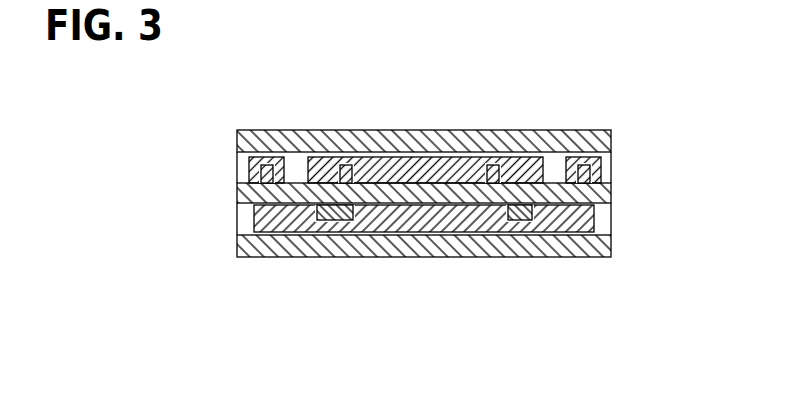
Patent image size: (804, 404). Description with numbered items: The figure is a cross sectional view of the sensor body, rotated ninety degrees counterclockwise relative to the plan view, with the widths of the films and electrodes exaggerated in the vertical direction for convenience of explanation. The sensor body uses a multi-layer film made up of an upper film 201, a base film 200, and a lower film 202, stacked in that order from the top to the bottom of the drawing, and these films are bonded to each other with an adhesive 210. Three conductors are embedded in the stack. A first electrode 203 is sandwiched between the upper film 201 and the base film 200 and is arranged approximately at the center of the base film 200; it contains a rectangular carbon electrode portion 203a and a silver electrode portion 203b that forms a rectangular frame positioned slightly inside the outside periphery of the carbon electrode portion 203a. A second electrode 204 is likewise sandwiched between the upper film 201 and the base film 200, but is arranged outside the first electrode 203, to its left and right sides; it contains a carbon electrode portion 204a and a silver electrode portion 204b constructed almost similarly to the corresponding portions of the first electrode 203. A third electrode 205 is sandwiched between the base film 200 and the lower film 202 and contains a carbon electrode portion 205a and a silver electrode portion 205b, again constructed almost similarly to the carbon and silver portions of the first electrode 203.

The base film 200 is at (609, 193).
The upper film 201 is at (609, 140).
The lower film 202 is at (609, 243).
The first electrode 203 is at (425, 98).
The carbon electrode portion 203a is at (386, 163).
The silver electrode portion 203b is at (387, 62).
The second electrode 204 is at (427, 98).
The carbon electrode portion 204a is at (265, 163).
The silver electrode portion 204b is at (270, 160).
The third electrode 205 is at (424, 297).
The carbon electrode portion 205a is at (403, 222).
The silver electrode portion 205b is at (331, 221).
The adhesive 210 is at (247, 230).